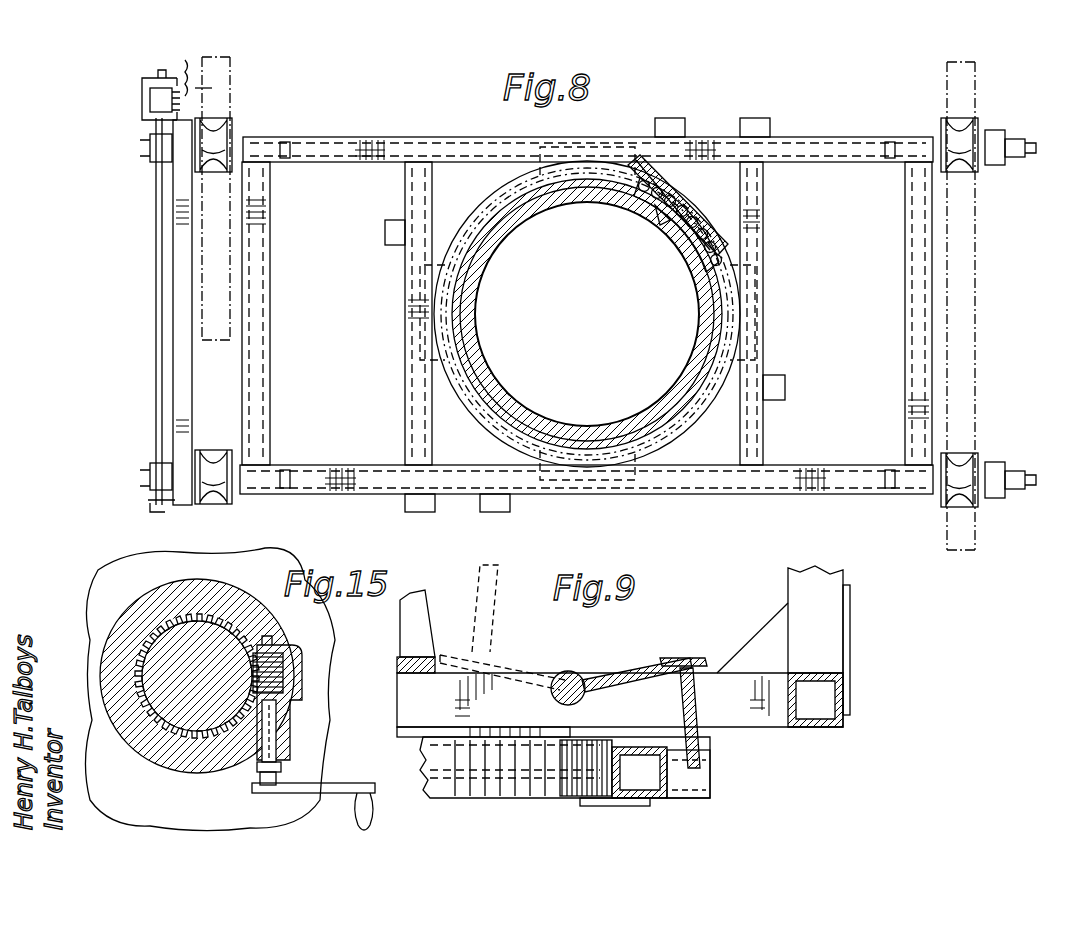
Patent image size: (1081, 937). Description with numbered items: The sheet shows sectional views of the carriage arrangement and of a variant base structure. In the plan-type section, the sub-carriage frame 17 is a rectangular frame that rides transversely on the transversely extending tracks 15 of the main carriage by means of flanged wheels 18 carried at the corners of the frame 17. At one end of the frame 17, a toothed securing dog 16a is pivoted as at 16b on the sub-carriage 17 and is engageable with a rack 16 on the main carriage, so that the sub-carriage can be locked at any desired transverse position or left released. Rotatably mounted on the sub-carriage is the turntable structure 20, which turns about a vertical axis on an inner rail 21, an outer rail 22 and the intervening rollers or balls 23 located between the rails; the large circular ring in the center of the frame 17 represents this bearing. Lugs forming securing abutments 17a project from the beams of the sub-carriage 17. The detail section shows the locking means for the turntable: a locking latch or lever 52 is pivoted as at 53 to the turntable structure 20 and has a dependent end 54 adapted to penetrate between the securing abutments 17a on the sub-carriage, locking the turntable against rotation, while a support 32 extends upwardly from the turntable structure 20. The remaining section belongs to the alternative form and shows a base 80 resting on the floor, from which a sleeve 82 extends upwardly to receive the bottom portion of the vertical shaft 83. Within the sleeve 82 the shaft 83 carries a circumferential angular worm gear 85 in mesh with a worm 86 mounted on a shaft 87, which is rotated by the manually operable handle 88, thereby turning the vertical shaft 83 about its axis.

In FIG. 8, the transversely extending track 15 is at (231, 70).
In FIG. 8, the rack 16 is at (185, 62).
In FIG. 8, the toothed securing dog 16a is at (165, 100).
In FIG. 8, the pivot 16b is at (158, 298).
In FIG. 8, the sub-carriage frame 17 is at (381, 137).
In FIG. 9, the sub-carriage frame 17 is at (648, 800).
In FIG. 8, the securing abutment 17a is at (672, 118).
In FIG. 9, the securing abutment 17a is at (700, 778).
In FIG. 8, the flanged wheel 18 is at (218, 135).
In FIG. 9, the turntable structure 20 is at (858, 696).
In FIG. 8, the inner rail 21 is at (692, 262).
In FIG. 9, the inner rail 21 is at (405, 767).
In FIG. 8, the outer rail 22 is at (684, 212).
In FIG. 9, the outer rail 22 is at (500, 790).
In FIG. 8, the roller or ball 23 is at (708, 238).
In FIG. 9, the roller or ball 23 is at (550, 790).
In FIG. 9, the support 32 is at (418, 633).
In FIG. 9, the locking latch or lever 52 is at (490, 660).
In FIG. 9, the pivot 53 is at (571, 671).
In FIG. 9, the dependent end 54 is at (485, 576).
In FIG. 15, the base 80 is at (128, 796).
In FIG. 15, the sleeve 82 is at (182, 596).
In FIG. 15, the vertical shaft 83 is at (218, 640).
In FIG. 15, the worm gear 85 is at (200, 735).
In FIG. 15, the worm 86 is at (300, 672).
In FIG. 15, the shaft 87 is at (290, 722).
In FIG. 15, the handle 88 is at (340, 795).